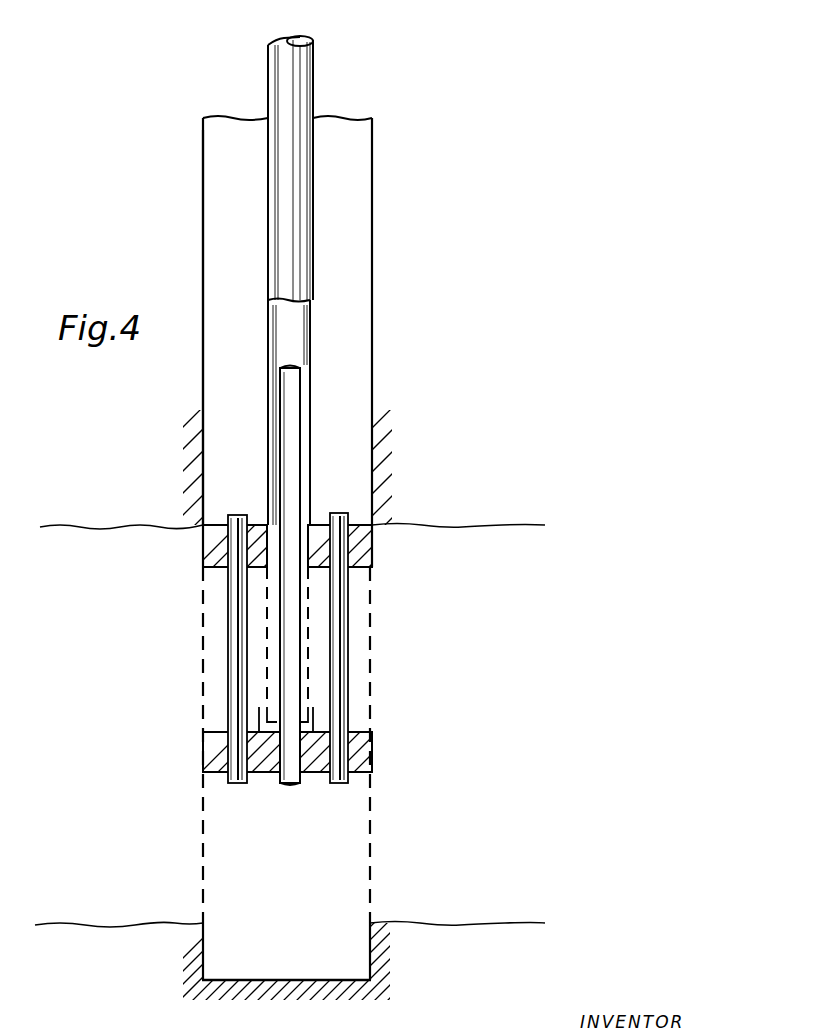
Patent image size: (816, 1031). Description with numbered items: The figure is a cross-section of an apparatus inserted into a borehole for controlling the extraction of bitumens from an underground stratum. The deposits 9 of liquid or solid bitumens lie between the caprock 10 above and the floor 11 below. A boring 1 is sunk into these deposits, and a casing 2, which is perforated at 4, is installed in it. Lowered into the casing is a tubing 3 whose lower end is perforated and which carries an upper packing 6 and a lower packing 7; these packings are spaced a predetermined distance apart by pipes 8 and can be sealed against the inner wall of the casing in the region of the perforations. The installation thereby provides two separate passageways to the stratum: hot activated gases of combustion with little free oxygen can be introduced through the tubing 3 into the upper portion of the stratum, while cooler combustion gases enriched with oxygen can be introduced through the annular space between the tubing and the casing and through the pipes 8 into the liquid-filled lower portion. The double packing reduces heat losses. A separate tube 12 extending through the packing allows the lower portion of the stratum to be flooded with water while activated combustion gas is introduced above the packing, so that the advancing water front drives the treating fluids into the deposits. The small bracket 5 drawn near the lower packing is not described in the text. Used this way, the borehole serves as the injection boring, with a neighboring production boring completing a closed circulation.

The boring 1 is at (373, 305).
The casing 2 is at (203, 372).
The tubing 3 is at (313, 172).
The perforations 4 is at (371, 835).
The spacer bracket 5 is at (305, 695).
The packing 6 is at (362, 553).
The packing 7 is at (360, 748).
The pipes 8 is at (228, 615).
The deposits 9 is at (423, 719).
The caprock 10 is at (428, 253).
The floor 11 is at (413, 966).
The separate tube 12 is at (300, 432).